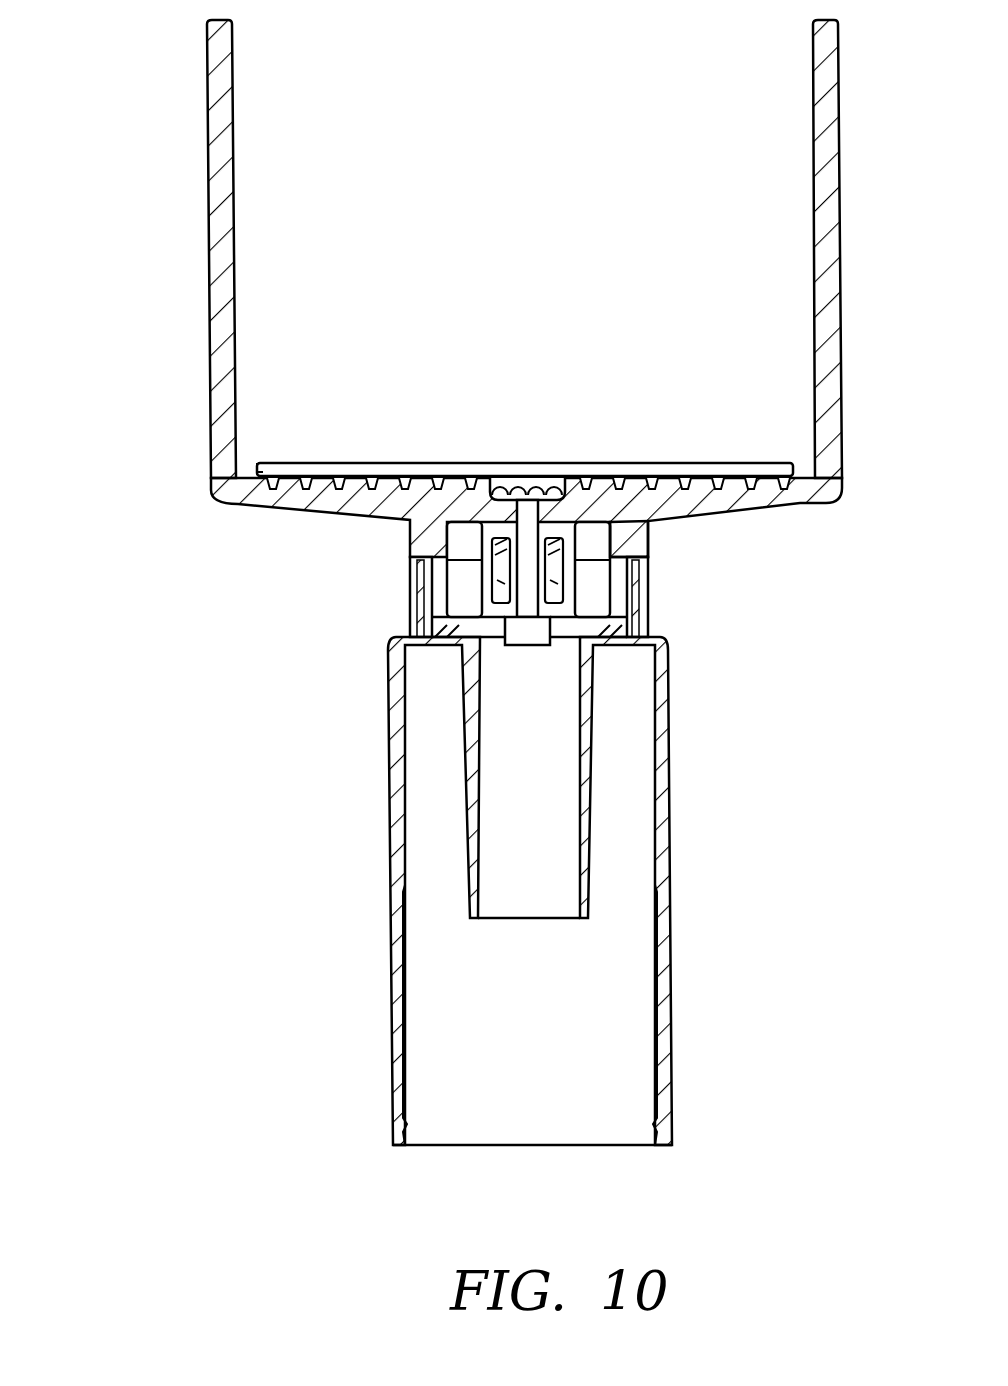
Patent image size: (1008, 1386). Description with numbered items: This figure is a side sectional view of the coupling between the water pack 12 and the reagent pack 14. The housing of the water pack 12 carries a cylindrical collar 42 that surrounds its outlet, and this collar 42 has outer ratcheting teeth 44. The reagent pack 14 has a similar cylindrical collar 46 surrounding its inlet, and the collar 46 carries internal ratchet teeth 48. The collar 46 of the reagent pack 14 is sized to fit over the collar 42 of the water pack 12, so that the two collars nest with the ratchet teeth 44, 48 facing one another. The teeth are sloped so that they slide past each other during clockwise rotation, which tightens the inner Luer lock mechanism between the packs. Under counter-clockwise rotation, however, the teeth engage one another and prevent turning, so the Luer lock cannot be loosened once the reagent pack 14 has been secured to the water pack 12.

The water pack 12 is at (148, 232).
The reagent pack 14 is at (363, 780).
The cylindrical collar 42 is at (638, 603).
The outer ratcheting teeth 44 is at (430, 600).
The cylindrical collar 46 is at (625, 532).
The internal ratchet teeth 48 is at (455, 535).